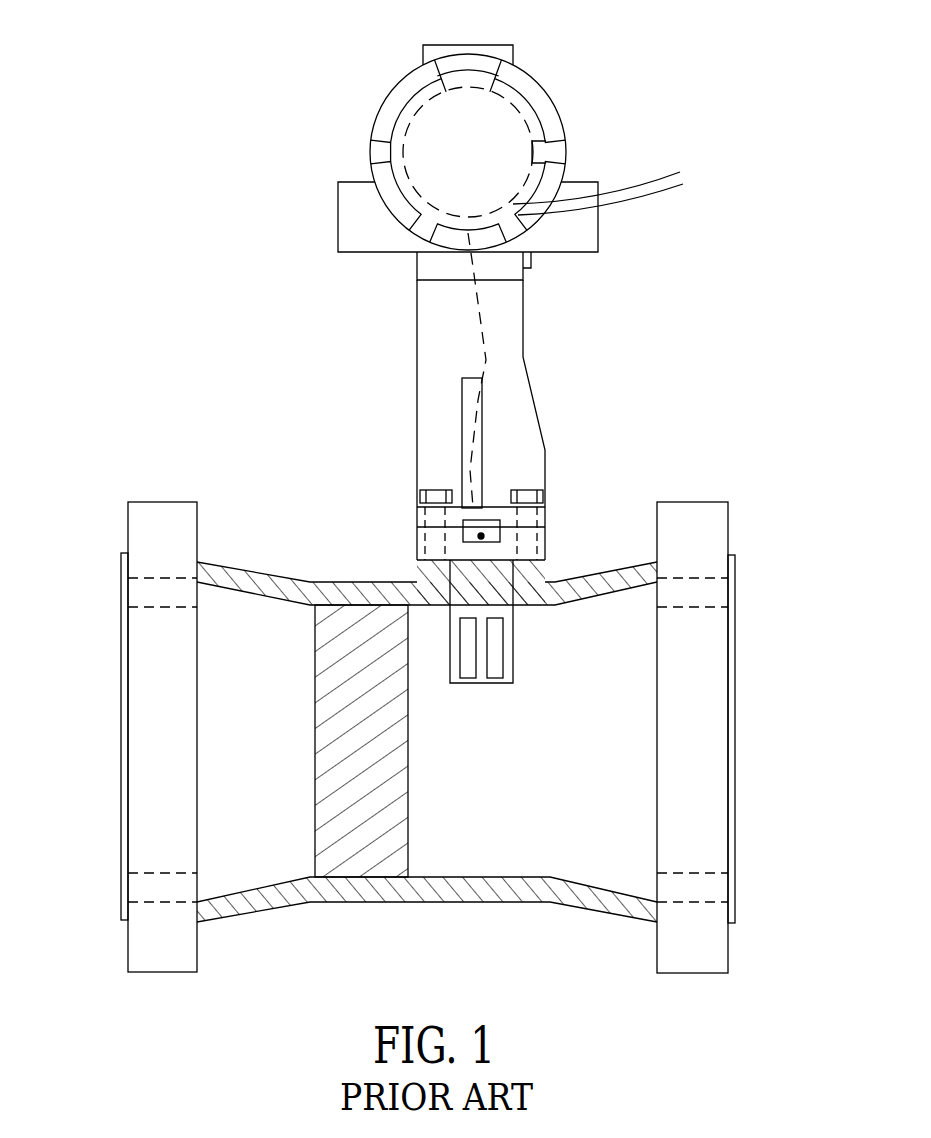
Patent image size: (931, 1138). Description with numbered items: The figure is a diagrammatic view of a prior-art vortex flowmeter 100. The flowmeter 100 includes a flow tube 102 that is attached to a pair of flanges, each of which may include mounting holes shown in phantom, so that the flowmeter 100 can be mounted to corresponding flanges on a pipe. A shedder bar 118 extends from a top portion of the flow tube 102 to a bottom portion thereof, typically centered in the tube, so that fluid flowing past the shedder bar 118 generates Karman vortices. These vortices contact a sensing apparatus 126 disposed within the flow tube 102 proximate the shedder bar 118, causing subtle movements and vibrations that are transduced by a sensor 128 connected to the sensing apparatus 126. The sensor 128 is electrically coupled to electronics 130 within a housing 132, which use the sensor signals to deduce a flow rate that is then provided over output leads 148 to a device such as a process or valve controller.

The flowmeter 100 is at (612, 57).
The flow tube 102 is at (218, 920).
The shedder bar 118 is at (375, 760).
The sensing apparatus 126 is at (513, 672).
The sensor 128 is at (481, 536).
The electronics 130 is at (530, 137).
The housing 132 is at (403, 80).
The output leads 148 is at (643, 200).